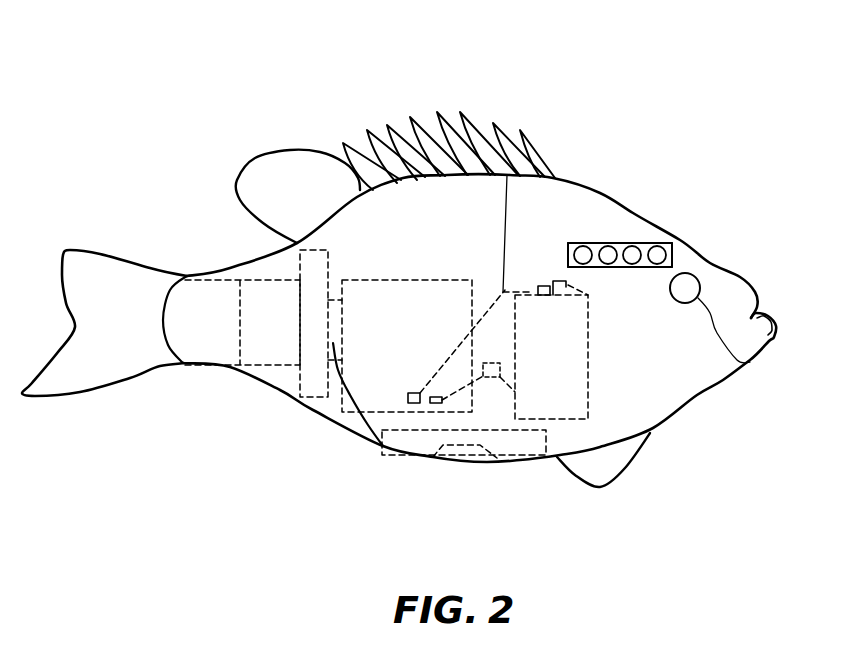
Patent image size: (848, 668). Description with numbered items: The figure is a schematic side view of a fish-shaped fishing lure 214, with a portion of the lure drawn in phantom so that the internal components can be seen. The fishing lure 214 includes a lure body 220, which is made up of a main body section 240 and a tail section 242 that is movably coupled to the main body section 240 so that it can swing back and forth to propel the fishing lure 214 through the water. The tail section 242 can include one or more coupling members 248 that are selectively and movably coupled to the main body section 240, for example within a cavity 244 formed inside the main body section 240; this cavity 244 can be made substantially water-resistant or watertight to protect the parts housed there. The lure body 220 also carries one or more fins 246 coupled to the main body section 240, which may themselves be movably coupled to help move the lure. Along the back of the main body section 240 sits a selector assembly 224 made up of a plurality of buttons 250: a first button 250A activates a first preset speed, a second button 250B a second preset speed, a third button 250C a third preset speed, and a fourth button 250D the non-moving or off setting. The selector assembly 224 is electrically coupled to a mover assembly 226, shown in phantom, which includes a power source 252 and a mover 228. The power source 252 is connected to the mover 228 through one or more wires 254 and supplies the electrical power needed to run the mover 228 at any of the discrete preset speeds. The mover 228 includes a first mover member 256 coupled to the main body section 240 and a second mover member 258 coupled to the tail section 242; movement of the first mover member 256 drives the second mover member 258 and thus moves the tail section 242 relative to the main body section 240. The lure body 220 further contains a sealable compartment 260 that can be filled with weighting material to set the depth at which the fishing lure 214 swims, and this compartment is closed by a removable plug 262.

The fishing lure 214 is at (170, 126).
The lure body 220 is at (678, 424).
The selector assembly 224 is at (684, 256).
The mover assembly 226 is at (450, 268).
The mover 228 is at (337, 419).
The main body section 240 is at (670, 377).
The tail section 242 is at (83, 363).
The cavity 244 is at (543, 203).
The fins 246 is at (295, 172).
The coupling members 248 is at (307, 270).
The buttons 250 is at (652, 269).
The first button 250A is at (582, 247).
The second button 250B is at (608, 243).
The third button 250C is at (632, 243).
The fourth button 250D is at (655, 243).
The power source 252 is at (565, 405).
The wires 254 is at (507, 175).
The first mover member 256 is at (383, 447).
The second mover member 258 is at (320, 297).
The sealable compartment 260 is at (520, 445).
The removable plug 262 is at (477, 453).